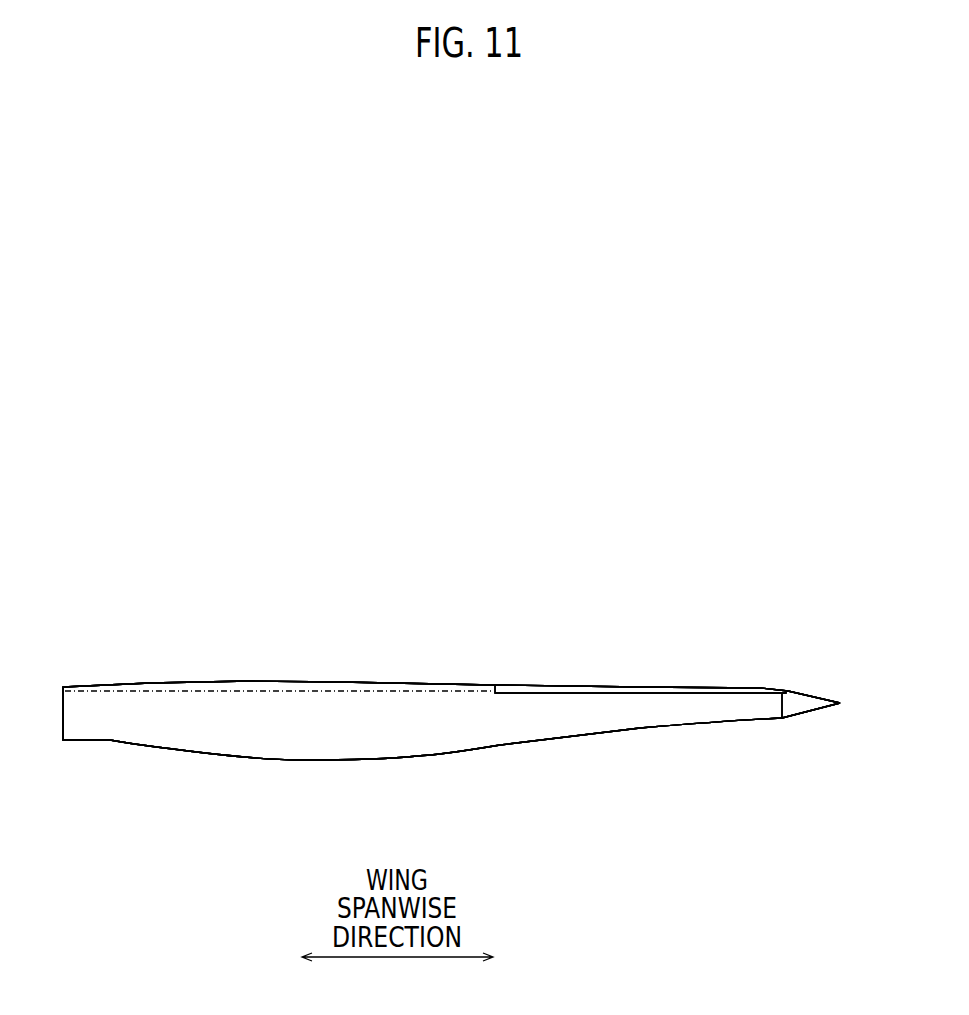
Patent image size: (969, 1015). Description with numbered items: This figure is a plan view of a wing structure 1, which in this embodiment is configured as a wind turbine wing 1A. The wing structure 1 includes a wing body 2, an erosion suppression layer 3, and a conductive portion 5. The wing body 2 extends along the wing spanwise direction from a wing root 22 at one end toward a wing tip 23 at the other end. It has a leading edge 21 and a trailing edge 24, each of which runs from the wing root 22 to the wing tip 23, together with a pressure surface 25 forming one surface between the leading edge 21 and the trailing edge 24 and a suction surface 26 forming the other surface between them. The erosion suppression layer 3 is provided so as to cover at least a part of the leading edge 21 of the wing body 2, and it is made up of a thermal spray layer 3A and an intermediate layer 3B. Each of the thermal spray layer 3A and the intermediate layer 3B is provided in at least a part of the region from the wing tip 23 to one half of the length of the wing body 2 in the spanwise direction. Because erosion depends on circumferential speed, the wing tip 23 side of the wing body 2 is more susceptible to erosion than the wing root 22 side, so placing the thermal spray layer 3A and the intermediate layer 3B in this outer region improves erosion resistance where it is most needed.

The wing structure 1 is at (550, 553).
The wind turbine wing 1A is at (451, 720).
The wing body 2 is at (421, 762).
The erosion suppression layer 3 is at (752, 687).
The thermal spray layer 3A is at (640, 701).
The intermediate layer 3B is at (640, 701).
The conductive portion 5 is at (320, 690).
The leading edge 21 is at (222, 681).
The wing root 22 is at (63, 703).
The wing tip 23 is at (840, 703).
The trailing edge 24 is at (307, 760).
The pressure surface 25 is at (408, 707).
The suction surface 26 is at (275, 743).